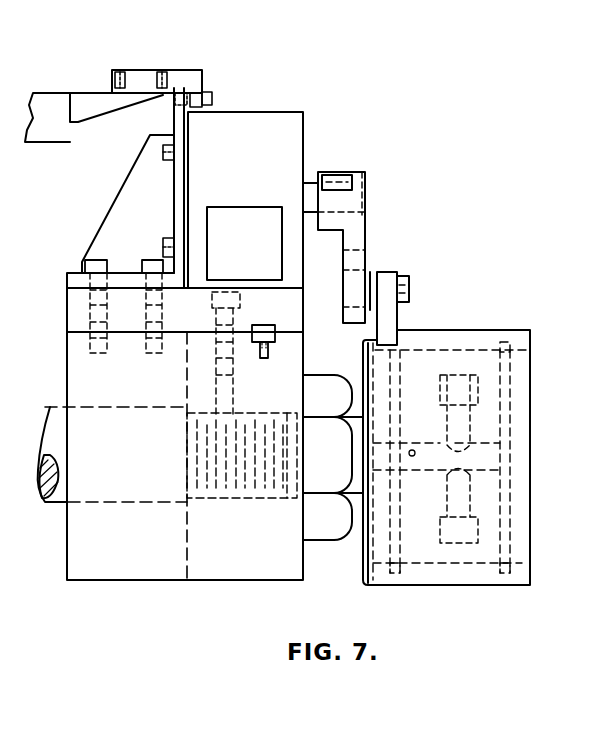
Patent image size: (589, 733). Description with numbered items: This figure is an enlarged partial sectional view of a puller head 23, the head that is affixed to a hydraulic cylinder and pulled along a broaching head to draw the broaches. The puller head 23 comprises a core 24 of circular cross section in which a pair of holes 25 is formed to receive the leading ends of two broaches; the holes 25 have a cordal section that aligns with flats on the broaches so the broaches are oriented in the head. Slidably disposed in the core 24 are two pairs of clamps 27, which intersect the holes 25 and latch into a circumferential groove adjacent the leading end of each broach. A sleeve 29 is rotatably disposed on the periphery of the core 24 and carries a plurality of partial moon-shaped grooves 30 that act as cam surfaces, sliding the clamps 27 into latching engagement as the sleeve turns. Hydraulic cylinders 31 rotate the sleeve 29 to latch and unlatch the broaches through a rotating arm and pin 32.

The puller head 23 is at (437, 330).
The core 24 is at (485, 368).
The holes 25 is at (480, 452).
The clamps 27 is at (503, 410).
The sleeve 29 is at (495, 330).
The partial moon-shaped grooves 30 is at (493, 387).
The hydraulic cylinders 31 is at (262, 212).
The rotating arm and pin 32 is at (372, 258).